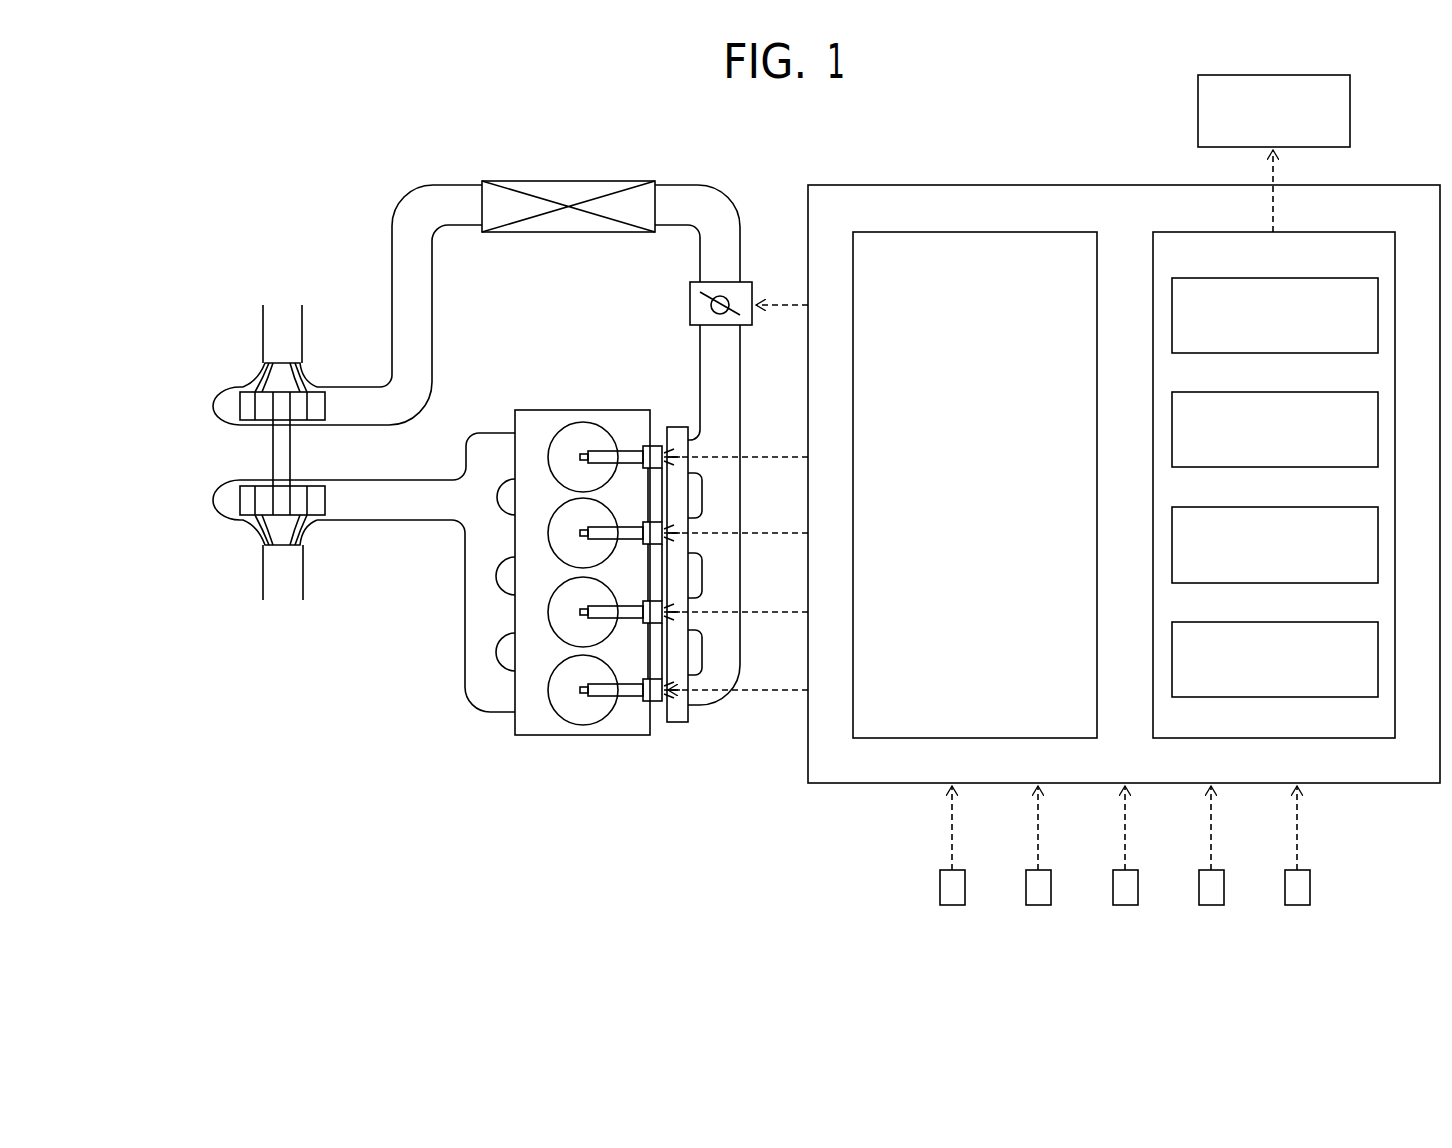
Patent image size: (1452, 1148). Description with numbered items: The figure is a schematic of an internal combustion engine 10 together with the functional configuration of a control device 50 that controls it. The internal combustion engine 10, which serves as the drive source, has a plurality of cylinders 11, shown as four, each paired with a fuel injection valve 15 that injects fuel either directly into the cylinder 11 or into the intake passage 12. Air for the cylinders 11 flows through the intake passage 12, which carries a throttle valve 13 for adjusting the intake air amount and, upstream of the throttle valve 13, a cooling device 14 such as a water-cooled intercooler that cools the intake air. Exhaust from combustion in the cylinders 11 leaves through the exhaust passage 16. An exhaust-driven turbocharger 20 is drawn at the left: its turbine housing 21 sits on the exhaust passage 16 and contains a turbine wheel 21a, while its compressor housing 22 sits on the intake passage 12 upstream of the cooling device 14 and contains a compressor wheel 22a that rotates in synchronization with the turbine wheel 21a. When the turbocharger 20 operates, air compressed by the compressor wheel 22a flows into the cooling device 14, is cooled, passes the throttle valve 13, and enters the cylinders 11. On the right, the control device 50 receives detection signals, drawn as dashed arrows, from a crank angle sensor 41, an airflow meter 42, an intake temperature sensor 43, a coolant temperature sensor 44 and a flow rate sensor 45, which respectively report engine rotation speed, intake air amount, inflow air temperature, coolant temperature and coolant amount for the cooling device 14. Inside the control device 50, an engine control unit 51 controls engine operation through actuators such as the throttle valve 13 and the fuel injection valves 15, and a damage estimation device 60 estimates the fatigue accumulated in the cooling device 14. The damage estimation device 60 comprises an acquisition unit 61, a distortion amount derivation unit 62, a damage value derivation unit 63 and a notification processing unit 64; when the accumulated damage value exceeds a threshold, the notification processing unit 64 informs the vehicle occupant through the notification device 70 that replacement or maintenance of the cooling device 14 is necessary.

The internal combustion engine 10 is at (472, 768).
The cylinder 11 is at (568, 515).
The intake passage 12 is at (433, 307).
The throttle valve 13 is at (712, 292).
The cooling device 14 is at (568, 233).
The fuel injection valve 15 is at (637, 625).
The exhaust passage 16 is at (386, 522).
The turbocharger 20 is at (197, 455).
The turbine housing 21 is at (215, 497).
The turbine wheel 21a is at (250, 530).
The compressor housing 22 is at (215, 400).
The compressor wheel 22a is at (258, 380).
The crank angle sensor 41 is at (952, 905).
The airflow meter 42 is at (1038, 905).
The intake temperature sensor 43 is at (1125, 905).
The coolant temperature sensor 44 is at (1211, 905).
The flow rate sensor 45 is at (1297, 905).
The control device 50 is at (1373, 184).
The engine control unit 51 is at (1057, 232).
The damage estimation device 60 is at (1355, 232).
The acquisition unit 61 is at (1307, 278).
The distortion amount derivation unit 62 is at (1307, 392).
The damage value derivation unit 63 is at (1307, 507).
The notification processing unit 64 is at (1307, 622).
The notification device 70 is at (1307, 76).